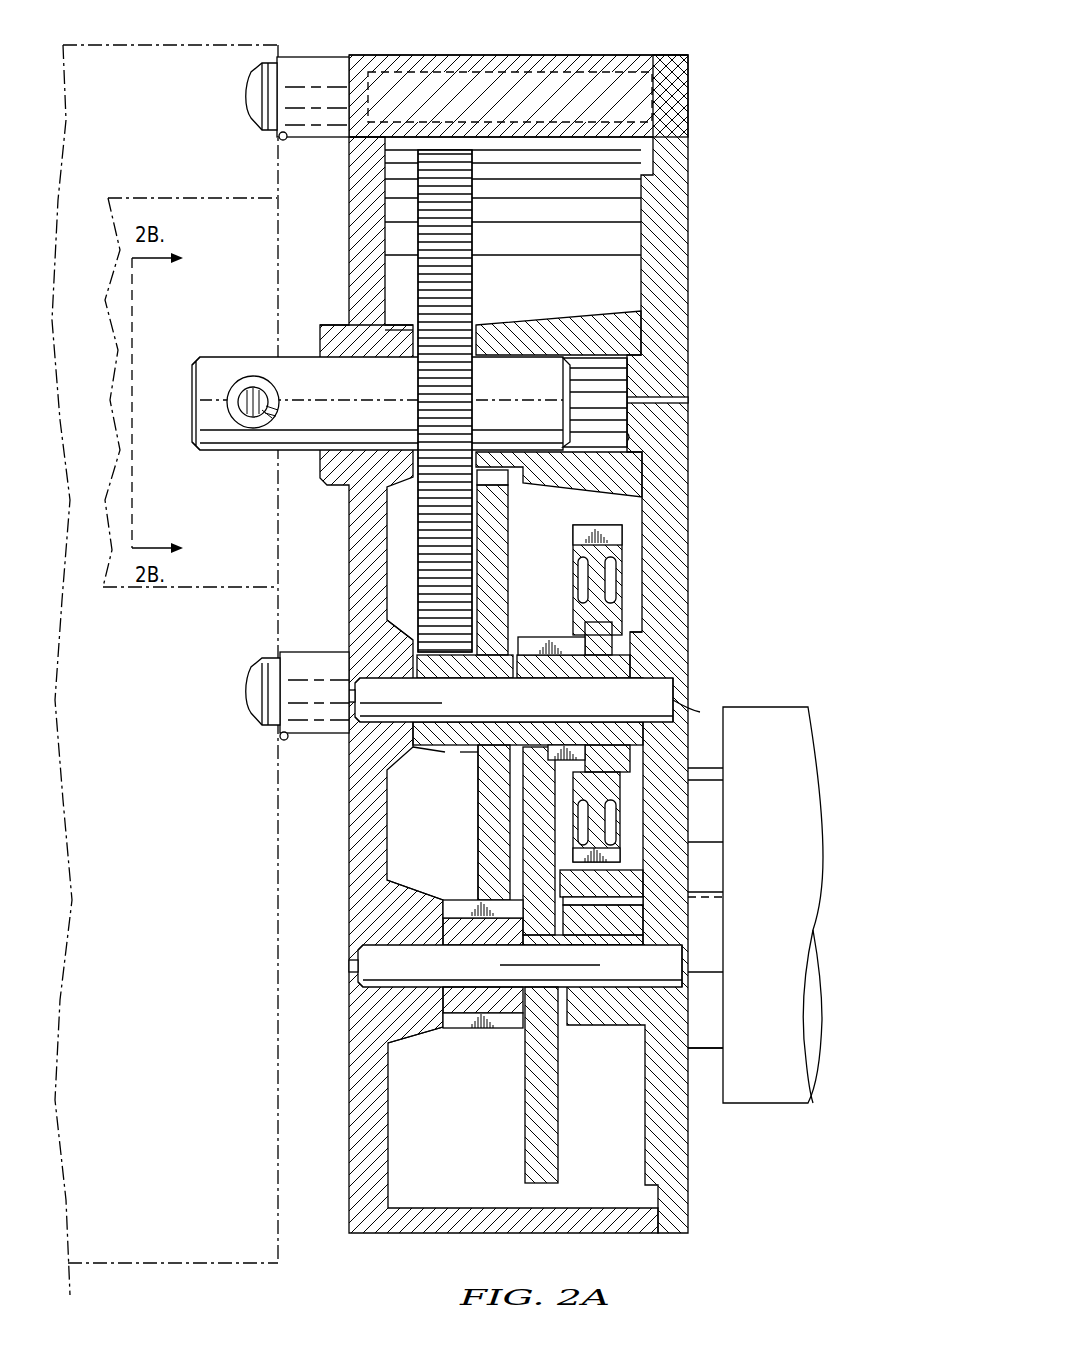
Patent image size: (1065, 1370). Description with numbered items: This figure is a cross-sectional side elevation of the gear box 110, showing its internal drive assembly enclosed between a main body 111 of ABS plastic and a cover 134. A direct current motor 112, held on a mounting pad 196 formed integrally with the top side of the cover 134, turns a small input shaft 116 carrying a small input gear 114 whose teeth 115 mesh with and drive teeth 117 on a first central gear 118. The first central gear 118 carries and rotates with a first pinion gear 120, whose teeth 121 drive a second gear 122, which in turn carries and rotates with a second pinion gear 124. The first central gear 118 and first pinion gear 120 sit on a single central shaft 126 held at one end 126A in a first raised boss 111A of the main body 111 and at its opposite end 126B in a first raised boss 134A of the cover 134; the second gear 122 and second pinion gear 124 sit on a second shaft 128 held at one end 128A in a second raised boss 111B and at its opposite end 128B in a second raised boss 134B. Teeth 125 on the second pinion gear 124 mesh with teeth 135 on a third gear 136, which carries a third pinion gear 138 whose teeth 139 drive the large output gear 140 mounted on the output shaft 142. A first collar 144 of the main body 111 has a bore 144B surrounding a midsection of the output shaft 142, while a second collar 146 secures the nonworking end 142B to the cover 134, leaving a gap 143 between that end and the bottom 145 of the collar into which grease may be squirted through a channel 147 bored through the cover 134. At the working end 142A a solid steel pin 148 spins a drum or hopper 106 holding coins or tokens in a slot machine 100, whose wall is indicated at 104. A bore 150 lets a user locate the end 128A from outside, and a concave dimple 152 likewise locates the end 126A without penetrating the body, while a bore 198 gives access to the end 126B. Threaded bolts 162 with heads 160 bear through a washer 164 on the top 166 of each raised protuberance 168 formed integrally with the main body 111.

The slot machine 100 is at (122, 60).
The frame wall 104 is at (278, 46).
The drum or hopper 106 is at (165, 197).
The gear box 110 is at (735, 508).
The main body 111 is at (395, 1235).
The first raised boss 111A is at (398, 626).
The second raised boss 111B is at (415, 1035).
The direct current motor 112 is at (813, 830).
The small input gear 114 is at (643, 898).
The teeth 115 is at (645, 875).
The small input shaft 116 is at (690, 902).
The teeth 117 is at (622, 858).
The first central gear 118 is at (622, 790).
The first pinion gear 120 is at (540, 645).
The teeth 121 is at (572, 620).
The second gear 122 is at (540, 815).
The second pinion gear 124 is at (445, 915).
The teeth 125 is at (445, 910).
The single central shaft 126 is at (525, 705).
The one end of the central shaft 126A is at (358, 700).
The opposite end of the central shaft 126B is at (678, 700).
The second shaft 128 is at (510, 970).
The one end of the second shaft 128A is at (360, 950).
The opposite end of the second shaft 128B is at (684, 962).
The cover 134 is at (690, 575).
The first raised boss 134A is at (640, 634).
The second raised boss 134B is at (570, 1027).
The teeth 135 is at (478, 888).
The third gear 136 is at (478, 848).
The third pinion gear 138 is at (415, 750).
The teeth 139 is at (465, 752).
The large output gear 140 is at (425, 540).
The output shaft 142 is at (250, 455).
The working end of the output shaft 142A is at (195, 375).
The nonworking end of the output shaft 142B is at (636, 420).
The gap 143 is at (612, 380).
The first collar 144 is at (340, 322).
The bore 144B is at (355, 372).
The bottom of the second collar 145 is at (630, 440).
The second collar 146 is at (518, 320).
The channel 147 is at (660, 405).
The solid steel pin 148 is at (252, 385).
The bore 150 is at (353, 975).
The concave dimple 152 is at (347, 706).
The heads 160 is at (248, 100).
The threaded bolts 162 is at (500, 68).
The washer 164 is at (262, 85).
The top of the raised protuberance 166 is at (280, 140).
The raised protuberance 168 is at (315, 140).
The mounting pad 196 is at (705, 1050).
The bore 198 is at (700, 712).